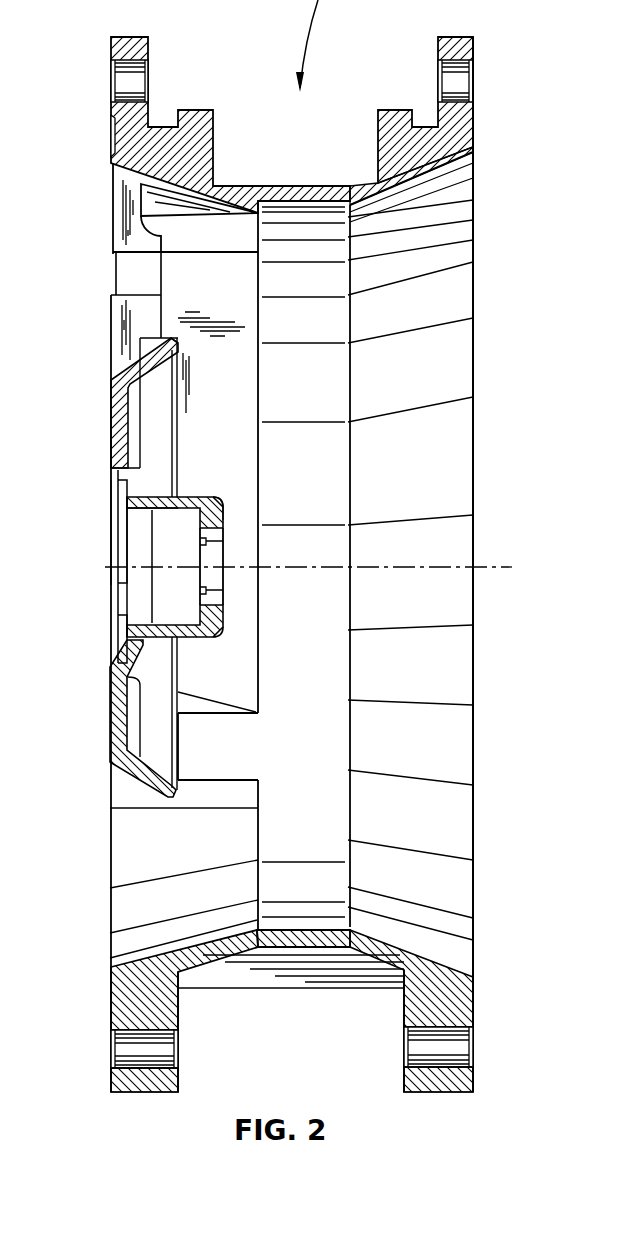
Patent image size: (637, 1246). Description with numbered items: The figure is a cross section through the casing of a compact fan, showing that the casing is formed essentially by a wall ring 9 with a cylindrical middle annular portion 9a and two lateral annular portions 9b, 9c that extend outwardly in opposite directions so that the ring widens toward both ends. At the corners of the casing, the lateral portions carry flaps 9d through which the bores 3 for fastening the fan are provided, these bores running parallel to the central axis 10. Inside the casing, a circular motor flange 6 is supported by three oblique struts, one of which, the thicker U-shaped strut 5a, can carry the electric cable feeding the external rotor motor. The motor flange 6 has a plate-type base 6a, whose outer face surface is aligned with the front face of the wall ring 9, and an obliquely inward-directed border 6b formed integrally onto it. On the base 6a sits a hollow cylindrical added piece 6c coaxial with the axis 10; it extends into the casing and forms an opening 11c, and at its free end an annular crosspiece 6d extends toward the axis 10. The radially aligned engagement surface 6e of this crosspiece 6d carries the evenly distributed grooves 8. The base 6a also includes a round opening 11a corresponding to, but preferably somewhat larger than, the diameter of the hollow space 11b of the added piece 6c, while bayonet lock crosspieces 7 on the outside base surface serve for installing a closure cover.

The bores 3 is at (455, 1042).
The strut 5a is at (127, 233).
The motor flange 6 is at (118, 418).
The plate-type base 6a is at (112, 453).
The border 6b is at (137, 363).
The hollow cylindrical added piece 6c is at (187, 505).
The annular crosspiece 6d is at (212, 513).
The engagement surface 6e is at (198, 622).
The bayonet lock crosspieces 7 is at (118, 595).
The grooves 8 is at (203, 540).
The wall ring 9 is at (408, 970).
The cylindrical middle annular portion 9a is at (293, 932).
The lateral annular portion 9b is at (205, 952).
The lateral annular portion 9c is at (387, 950).
The flaps 9d is at (455, 1080).
The central axis 10 is at (450, 567).
The round opening 11a is at (112, 503).
The hollow space 11b is at (178, 512).
The opening 11c is at (223, 527).